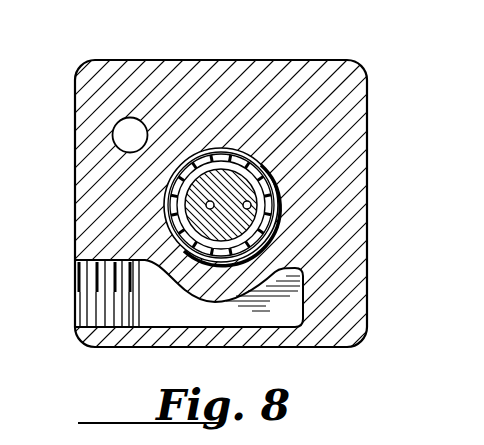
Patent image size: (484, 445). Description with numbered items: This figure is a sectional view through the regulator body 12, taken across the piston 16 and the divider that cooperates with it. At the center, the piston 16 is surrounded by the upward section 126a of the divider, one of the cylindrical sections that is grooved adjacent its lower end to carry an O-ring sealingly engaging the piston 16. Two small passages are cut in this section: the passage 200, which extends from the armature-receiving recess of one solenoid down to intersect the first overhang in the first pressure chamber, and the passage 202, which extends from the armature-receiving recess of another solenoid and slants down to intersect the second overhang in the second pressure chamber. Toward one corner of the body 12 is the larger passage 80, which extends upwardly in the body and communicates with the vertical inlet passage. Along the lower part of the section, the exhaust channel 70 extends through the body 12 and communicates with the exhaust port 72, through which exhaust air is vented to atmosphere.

The housing block 12 is at (368, 245).
The piston 16 is at (263, 168).
The exhaust channel 70 is at (262, 315).
The exhaust port 72 is at (90, 297).
The larger passage 80 is at (115, 127).
The upward section 126a is at (239, 160).
The passage 200 is at (206, 205).
The passage 202 is at (251, 205).